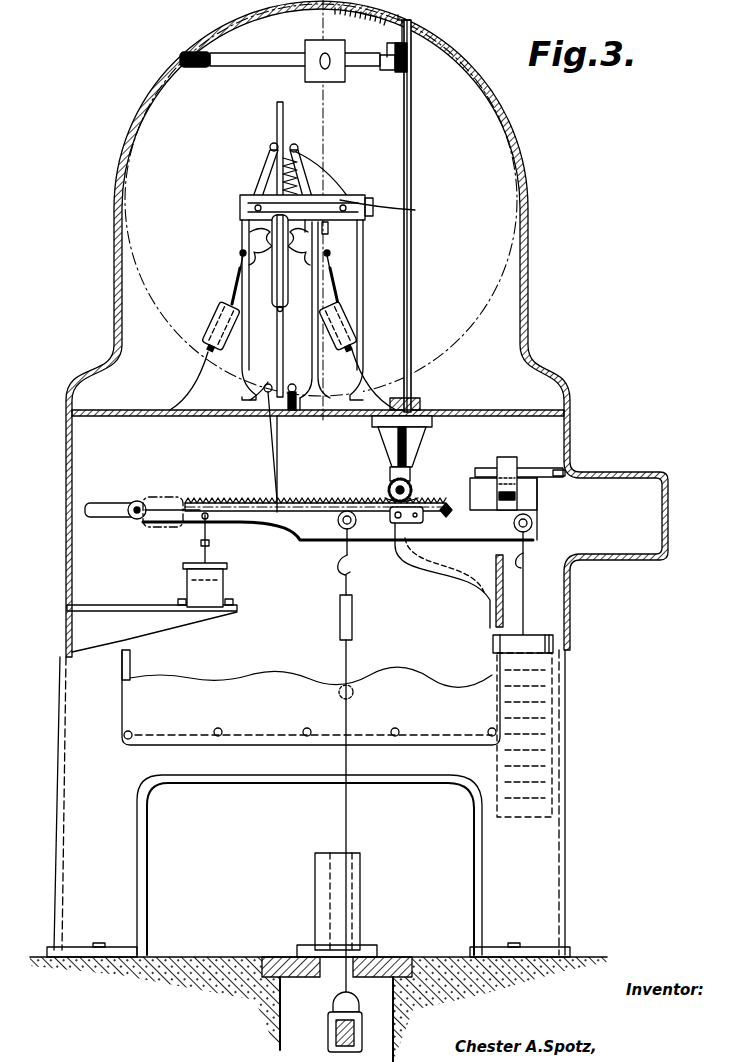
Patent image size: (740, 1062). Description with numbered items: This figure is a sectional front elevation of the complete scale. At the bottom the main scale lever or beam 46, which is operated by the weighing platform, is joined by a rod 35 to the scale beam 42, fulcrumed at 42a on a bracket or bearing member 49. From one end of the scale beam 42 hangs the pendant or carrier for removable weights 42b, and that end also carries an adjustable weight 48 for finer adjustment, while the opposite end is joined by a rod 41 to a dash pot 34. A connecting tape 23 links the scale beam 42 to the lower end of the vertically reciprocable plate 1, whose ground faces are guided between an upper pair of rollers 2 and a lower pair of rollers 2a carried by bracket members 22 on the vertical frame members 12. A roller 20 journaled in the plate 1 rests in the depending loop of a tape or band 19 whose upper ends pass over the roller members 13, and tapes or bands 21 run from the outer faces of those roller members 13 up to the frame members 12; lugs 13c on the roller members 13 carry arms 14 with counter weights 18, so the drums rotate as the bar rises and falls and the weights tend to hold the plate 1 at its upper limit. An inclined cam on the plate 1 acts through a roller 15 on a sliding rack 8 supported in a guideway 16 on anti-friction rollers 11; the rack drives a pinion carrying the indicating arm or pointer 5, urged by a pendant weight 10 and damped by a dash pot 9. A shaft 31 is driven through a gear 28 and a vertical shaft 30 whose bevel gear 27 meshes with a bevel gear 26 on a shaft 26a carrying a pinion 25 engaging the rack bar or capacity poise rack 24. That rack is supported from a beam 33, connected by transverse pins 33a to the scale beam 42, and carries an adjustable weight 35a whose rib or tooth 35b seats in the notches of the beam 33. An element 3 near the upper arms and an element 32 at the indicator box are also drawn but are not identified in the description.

The vertically reciprocable plate 1 is at (277, 114).
The upper pair of opposed rollers 2 is at (270, 146).
The lower pair of opposed rollers 2a is at (270, 395).
The connecting link 3 is at (312, 160).
The indicating arm or pointer 5 is at (324, 118).
The sliding rack 8 is at (384, 210).
The dash pot 9 is at (298, 230).
The pendant weight 10 is at (328, 232).
The anti-friction rollers 11 is at (255, 197).
The vertical frame members 12 is at (242, 222).
The roller members 13 is at (250, 236).
The lugs or projections 13c is at (240, 252).
The arms 14 is at (234, 288).
The roller 15 is at (303, 176).
The guideway 16 is at (368, 196).
The counter weights 18 is at (206, 322).
The tape or band 19 is at (288, 292).
The roller 20 is at (283, 312).
The tapes or bands 21 is at (240, 268).
The bracket members 22 is at (268, 150).
The connecting tape 23 is at (278, 460).
The rack bar or capacity poise rack 24 is at (318, 498).
The pinion 25 is at (388, 491).
The bevel gear 26 is at (412, 489).
The shaft 26a is at (392, 486).
The bevel gear 27 is at (408, 474).
The gear 28 is at (412, 60).
The vertical shaft 30 is at (411, 125).
The shaft 31 is at (276, 67).
The indicator dial box 32 is at (305, 44).
The beam or bar 33 is at (305, 525).
The transverse pins or rods 33a is at (137, 505).
The dash pot 34 is at (215, 600).
The rod 35 is at (350, 658).
The adjustable weight 35a is at (163, 528).
The rib or tooth 35b is at (160, 500).
The rod 41 is at (208, 547).
The scale beam 42 is at (360, 540).
The fulcrum 42a is at (420, 524).
The pendant or carrier for removable weights 42b is at (530, 645).
The main scale lever or beam 46 is at (354, 1040).
The adjustable weight 48 is at (512, 468).
The bracket or bearing member 49 is at (445, 570).